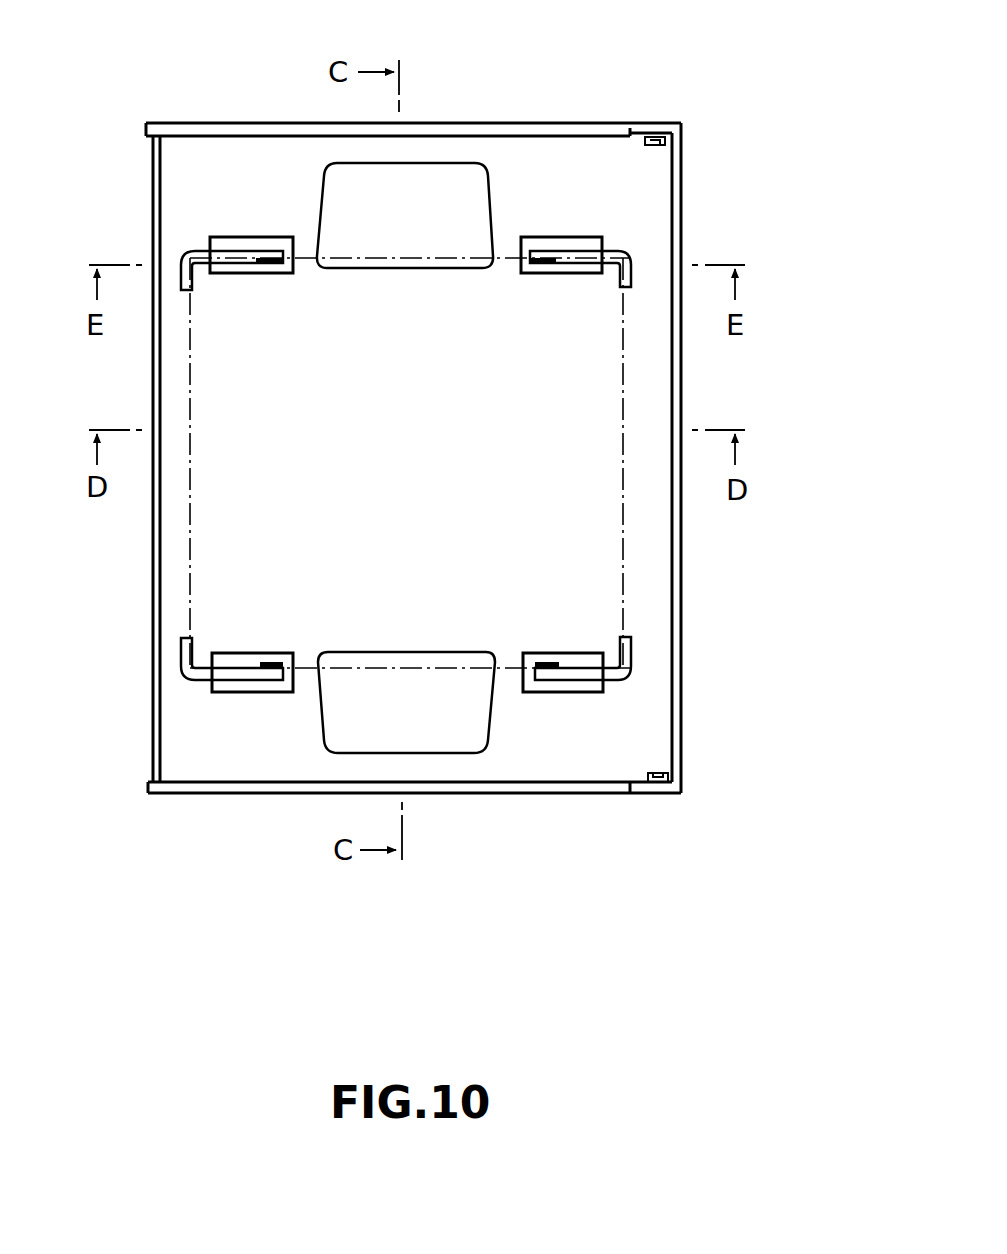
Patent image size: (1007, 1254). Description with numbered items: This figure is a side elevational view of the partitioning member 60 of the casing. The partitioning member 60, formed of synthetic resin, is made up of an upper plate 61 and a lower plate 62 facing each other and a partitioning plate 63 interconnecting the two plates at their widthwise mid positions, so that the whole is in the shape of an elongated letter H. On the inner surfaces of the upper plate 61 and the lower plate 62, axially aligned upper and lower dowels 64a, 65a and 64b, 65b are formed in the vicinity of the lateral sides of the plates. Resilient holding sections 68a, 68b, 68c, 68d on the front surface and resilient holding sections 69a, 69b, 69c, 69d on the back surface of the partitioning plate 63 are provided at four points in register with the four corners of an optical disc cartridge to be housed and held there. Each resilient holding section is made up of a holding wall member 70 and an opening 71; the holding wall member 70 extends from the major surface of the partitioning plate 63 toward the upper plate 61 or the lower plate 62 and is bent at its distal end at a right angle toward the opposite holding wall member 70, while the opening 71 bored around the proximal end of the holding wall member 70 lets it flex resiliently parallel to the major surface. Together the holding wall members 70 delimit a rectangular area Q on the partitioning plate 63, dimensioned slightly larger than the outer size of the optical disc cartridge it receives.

The partitioning member 60 is at (730, 381).
The upper plate 61 is at (498, 122).
The lower plate 62 is at (502, 795).
The partitioning plate 63 is at (676, 545).
The upper dowel 64a is at (668, 147).
The upper dowel 64b is at (656, 773).
The lower dowel 65a is at (748, 128).
The lower dowel 65b is at (750, 749).
The resilient holding section 68a is at (262, 72).
The resilient holding section 68b is at (745, 240).
The resilient holding section 68c is at (665, 850).
The resilient holding section 68d is at (258, 848).
The resilient holding section 69a is at (215, 140).
The resilient holding section 69b is at (686, 218).
The resilient holding section 69c is at (615, 779).
The resilient holding section 69d is at (215, 779).
The holding wall member 70 is at (190, 250).
The opening 71 is at (243, 237).
The rectangular area Q is at (188, 535).